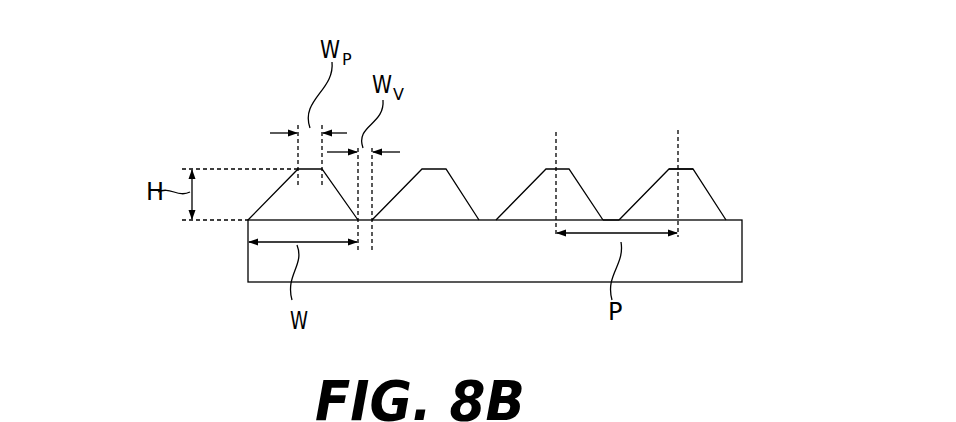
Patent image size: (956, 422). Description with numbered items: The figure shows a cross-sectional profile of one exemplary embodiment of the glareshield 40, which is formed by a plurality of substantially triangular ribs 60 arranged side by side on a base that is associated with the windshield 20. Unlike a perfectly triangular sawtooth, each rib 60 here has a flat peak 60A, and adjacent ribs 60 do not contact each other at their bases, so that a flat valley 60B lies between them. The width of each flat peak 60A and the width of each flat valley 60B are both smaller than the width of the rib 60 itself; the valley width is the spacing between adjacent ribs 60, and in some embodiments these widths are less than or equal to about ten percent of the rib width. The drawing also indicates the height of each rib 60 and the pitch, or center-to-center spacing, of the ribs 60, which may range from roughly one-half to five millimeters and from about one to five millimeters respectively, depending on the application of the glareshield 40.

The windshield 20 is at (495, 321).
The glareshield 40 is at (124, 229).
The rib 60 is at (697, 198).
The peak 60A is at (685, 168).
The valley 60B is at (609, 218).